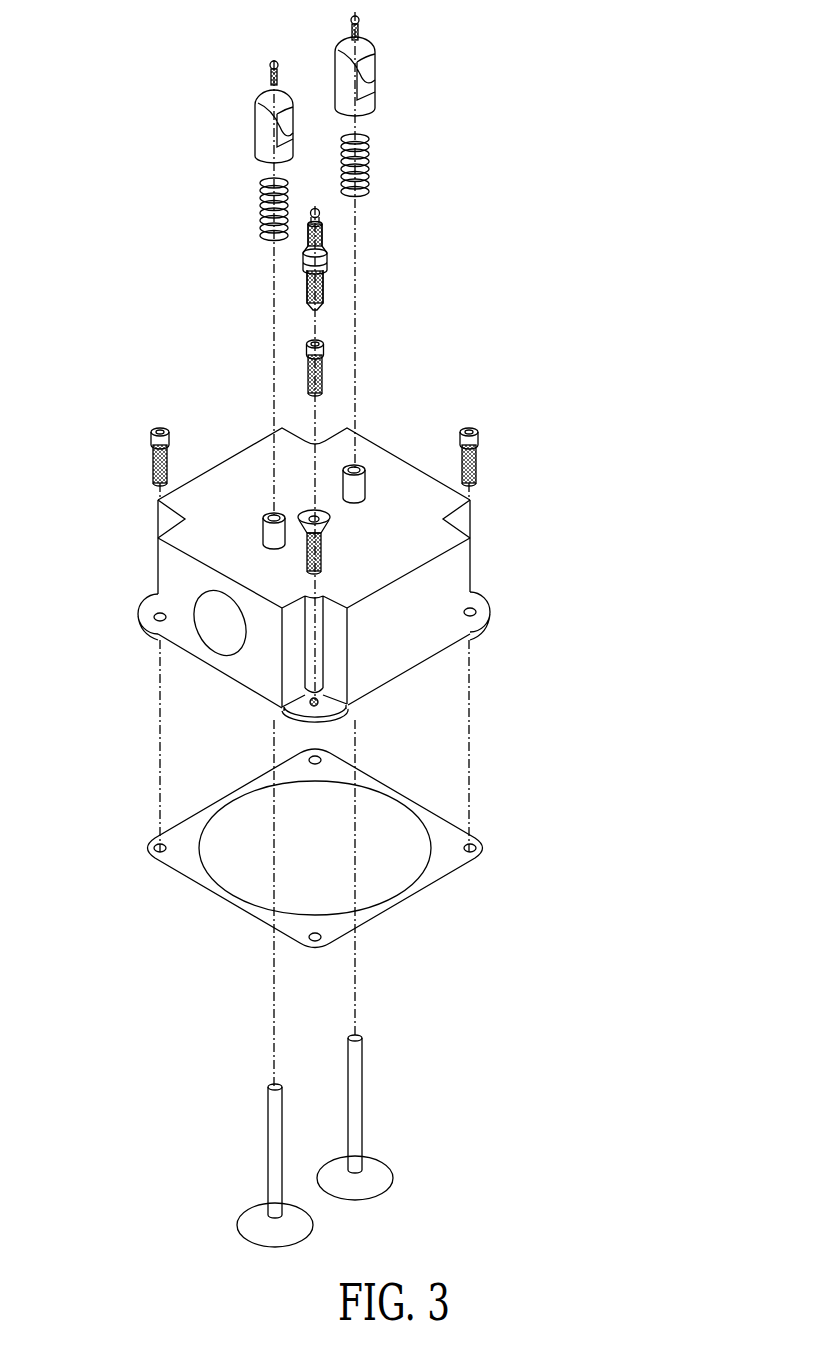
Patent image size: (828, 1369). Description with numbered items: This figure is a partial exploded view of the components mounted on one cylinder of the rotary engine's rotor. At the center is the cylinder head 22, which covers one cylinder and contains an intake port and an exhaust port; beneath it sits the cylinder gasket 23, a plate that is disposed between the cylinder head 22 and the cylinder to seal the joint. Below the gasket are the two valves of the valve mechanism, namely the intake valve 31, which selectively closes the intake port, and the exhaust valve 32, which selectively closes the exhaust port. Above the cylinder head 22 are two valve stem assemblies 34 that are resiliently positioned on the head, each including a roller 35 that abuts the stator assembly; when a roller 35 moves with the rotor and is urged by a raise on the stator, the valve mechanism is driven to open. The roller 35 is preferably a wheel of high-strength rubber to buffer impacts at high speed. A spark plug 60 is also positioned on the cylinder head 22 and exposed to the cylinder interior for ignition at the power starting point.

The cylinder head 22 is at (445, 595).
The cylinder gasket 23 is at (440, 868).
The intake valve 31 is at (372, 1165).
The exhaust valve 32 is at (250, 1213).
The valve stem assembly 34 is at (443, 90).
The roller 35 is at (260, 104).
The spark plug 60 is at (327, 260).